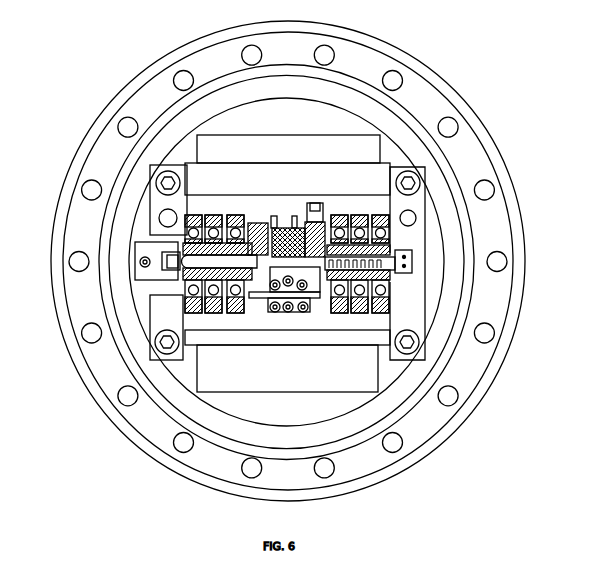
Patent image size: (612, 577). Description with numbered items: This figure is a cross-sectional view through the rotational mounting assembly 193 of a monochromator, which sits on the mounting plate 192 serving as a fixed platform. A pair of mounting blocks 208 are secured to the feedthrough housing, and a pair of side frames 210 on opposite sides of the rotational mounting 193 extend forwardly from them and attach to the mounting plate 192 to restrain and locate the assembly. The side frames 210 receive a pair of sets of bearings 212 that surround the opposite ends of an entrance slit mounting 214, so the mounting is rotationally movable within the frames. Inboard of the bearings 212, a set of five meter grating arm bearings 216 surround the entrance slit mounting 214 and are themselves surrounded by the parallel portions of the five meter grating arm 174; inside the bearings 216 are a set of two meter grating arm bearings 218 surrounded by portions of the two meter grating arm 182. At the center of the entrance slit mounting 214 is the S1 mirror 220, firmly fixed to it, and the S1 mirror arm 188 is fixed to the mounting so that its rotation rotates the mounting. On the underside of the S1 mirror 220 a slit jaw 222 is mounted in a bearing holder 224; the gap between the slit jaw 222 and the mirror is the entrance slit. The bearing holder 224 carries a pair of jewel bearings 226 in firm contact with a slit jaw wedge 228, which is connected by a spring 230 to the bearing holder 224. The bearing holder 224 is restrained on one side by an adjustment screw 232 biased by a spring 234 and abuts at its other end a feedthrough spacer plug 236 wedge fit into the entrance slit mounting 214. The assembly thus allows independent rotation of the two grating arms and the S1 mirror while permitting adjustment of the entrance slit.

The five meter grating arm 174 is at (197, 222).
The two meter grating arm 182 is at (338, 225).
The S1 mirror arm 188 is at (313, 203).
The mounting plate 192 is at (360, 338).
The rotational mounting assembly 193 is at (433, 262).
The mounting blocks 208 is at (157, 323).
The side frames 210 is at (197, 197).
The bearings 212 is at (150, 230).
The entrance slit mounting 214 is at (254, 223).
The five meter grating arm bearings 216 is at (357, 215).
The two meter grating arm bearings 218 is at (236, 220).
The S1 mirror 220 is at (283, 227).
The slit jaw 222 is at (267, 222).
The bearing holder 224 is at (250, 298).
The jewel bearings 226 is at (295, 307).
The slit jaw wedge 228 is at (267, 305).
The spring 230 is at (272, 306).
The adjustment screw 232 is at (408, 273).
The spring 234 is at (398, 248).
The feedthrough spacer plug 236 is at (140, 288).